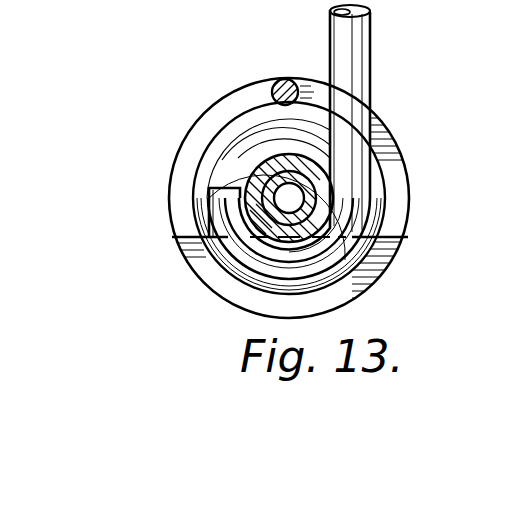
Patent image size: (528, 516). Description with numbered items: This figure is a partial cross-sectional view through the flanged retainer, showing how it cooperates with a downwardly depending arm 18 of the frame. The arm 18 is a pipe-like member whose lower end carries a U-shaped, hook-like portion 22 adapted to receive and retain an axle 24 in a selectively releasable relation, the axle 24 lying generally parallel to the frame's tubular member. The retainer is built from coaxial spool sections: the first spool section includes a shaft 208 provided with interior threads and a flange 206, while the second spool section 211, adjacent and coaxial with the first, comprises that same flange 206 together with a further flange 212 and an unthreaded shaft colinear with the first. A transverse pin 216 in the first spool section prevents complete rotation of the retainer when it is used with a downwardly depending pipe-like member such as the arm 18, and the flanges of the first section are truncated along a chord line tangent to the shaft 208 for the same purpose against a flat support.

The downwardly depending arm 18 is at (370, 50).
The U-shaped hook-like portion 22 is at (227, 207).
The axle 24 is at (247, 165).
The flange 206 is at (238, 103).
The shaft 208 is at (310, 173).
The second spool section 211 is at (360, 260).
The flange 212 is at (230, 287).
The transverse pin 216 is at (283, 80).